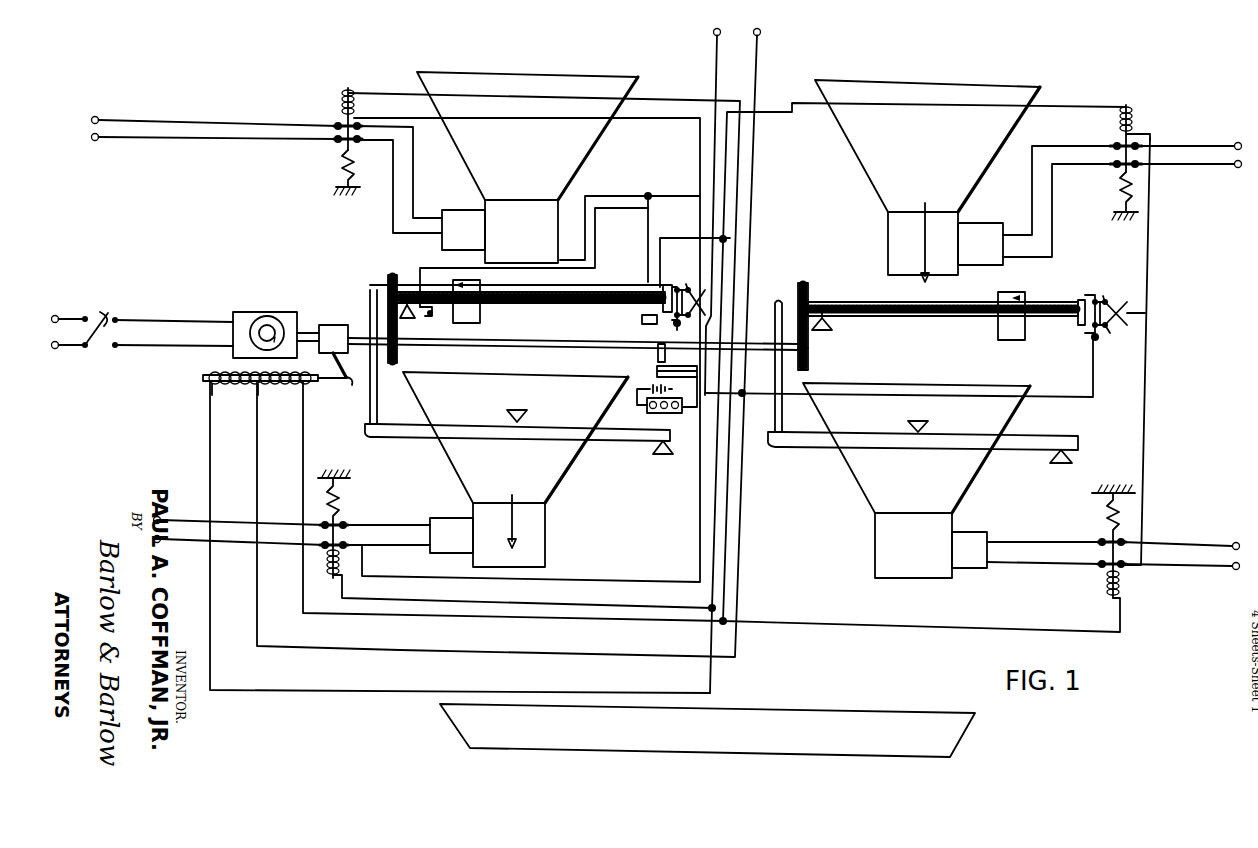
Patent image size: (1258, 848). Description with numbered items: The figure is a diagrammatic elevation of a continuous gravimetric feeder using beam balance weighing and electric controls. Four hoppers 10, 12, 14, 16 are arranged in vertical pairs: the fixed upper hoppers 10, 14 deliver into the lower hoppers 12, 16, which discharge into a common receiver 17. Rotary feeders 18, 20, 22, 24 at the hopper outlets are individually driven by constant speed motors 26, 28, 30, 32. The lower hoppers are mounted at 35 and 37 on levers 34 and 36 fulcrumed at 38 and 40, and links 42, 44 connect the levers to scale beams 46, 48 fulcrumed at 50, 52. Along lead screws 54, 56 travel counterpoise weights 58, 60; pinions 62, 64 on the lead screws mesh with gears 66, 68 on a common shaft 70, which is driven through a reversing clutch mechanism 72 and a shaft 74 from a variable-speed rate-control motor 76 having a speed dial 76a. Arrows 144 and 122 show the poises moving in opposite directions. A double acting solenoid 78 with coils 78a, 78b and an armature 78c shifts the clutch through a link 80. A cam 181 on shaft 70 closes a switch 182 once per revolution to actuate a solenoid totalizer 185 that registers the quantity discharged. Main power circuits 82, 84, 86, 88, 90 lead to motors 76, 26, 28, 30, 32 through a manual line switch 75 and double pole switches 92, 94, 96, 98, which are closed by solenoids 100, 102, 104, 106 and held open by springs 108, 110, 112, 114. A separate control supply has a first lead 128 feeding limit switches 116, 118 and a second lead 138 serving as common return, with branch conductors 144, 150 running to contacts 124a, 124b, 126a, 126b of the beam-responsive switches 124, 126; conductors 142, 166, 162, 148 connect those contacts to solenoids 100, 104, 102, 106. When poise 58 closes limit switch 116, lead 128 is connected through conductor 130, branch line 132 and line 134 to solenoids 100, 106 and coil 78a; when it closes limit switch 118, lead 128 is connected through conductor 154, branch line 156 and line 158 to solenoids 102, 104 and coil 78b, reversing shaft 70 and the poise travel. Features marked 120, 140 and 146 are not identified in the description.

The hopper 10 is at (588, 75).
The hopper 12 is at (563, 477).
The hopper 14 is at (1003, 84).
The hopper 16 is at (848, 470).
The common receiver 17 is at (965, 736).
The rotary feeder 18 is at (560, 218).
The rotary feeder 20 is at (548, 522).
The rotary feeder 22 is at (886, 256).
The rotary feeder 24 is at (876, 536).
The constant speed motor 26 is at (458, 210).
The constant speed motor 28 is at (441, 518).
The constant speed motor 30 is at (985, 222).
The constant speed motor 32 is at (982, 532).
The lever 34 is at (622, 442).
The hopper mounting 35 is at (522, 412).
The lever 36 is at (1030, 450).
The hopper mounting 37 is at (924, 424).
The fulcrum 38 is at (672, 452).
The fulcrum 40 is at (1074, 458).
The link 42 is at (374, 406).
The link 44 is at (783, 413).
The scale beam 46 is at (541, 306).
The scale beam 48 is at (924, 318).
The beam fulcrum 50 is at (410, 320).
The beam fulcrum 52 is at (824, 333).
The lead screw 54 is at (580, 306).
The lead screw 56 is at (969, 318).
The counterpoise weight 58 is at (481, 314).
The counterpoise weight 60 is at (1000, 340).
The pinion 62 is at (392, 274).
The pinion 64 is at (803, 283).
The gear 66 is at (398, 358).
The gear 68 is at (810, 366).
The common shaft 70 is at (560, 351).
The reversing clutch mechanism 72 is at (336, 325).
The shaft 74 is at (307, 332).
The line switch 75 is at (96, 314).
The variable-speed rate-control motor 76 is at (233, 318).
The dial 76a is at (267, 325).
The double acting solenoid 78 is at (194, 391).
The solenoid coil 78a is at (278, 390).
The solenoid coil 78b is at (236, 390).
The armature 78c is at (206, 374).
The link 80 is at (327, 382).
The main power circuit 82 is at (130, 324).
The main power circuit 84 is at (106, 128).
The main power circuit 86 is at (162, 518).
The main power circuit 88 is at (1228, 165).
The main power circuit 90 is at (1230, 545).
The double pole switch 92 is at (331, 158).
The double pole switch 94 is at (358, 510).
The double pole switch 96 is at (1107, 166).
The double pole switch 98 is at (1084, 573).
The solenoid 100 is at (341, 100).
The solenoid 102 is at (342, 572).
The solenoid 104 is at (1134, 120).
The solenoid 106 is at (1107, 592).
The spring 108 is at (350, 170).
The spring 110 is at (345, 487).
The spring 112 is at (1110, 190).
The spring 114 is at (1104, 518).
The limit switch 116 is at (429, 316).
The limit switch 118 is at (640, 320).
The pivot 120 is at (352, 388).
The arrow 122 is at (1012, 297).
The switch 124 is at (717, 289).
The contact 124a is at (670, 326).
The contact 124b is at (686, 282).
The switch 126 is at (1157, 316).
The contact 126a is at (1108, 337).
The contact 126b is at (1103, 292).
The first lead 128 is at (714, 45).
The conductor 130 is at (534, 257).
The branch line 132 is at (540, 96).
The line 134 is at (530, 618).
The second lead 138 is at (760, 62).
The feed direction arrow 140 is at (514, 498).
The conductor 142 is at (698, 170).
The branch conductor 144 is at (470, 283).
The feed direction arrow 146 is at (932, 248).
The conductor 148 is at (1146, 410).
The branch conductor 150 is at (1073, 396).
The conductor 154 is at (672, 232).
The branch line 156 is at (948, 112).
The line 158 is at (507, 690).
The conductor 162 is at (698, 492).
The conductor 166 is at (1148, 230).
The cam 181 is at (666, 356).
The switch 182 is at (658, 370).
The solenoid totalizer 185 is at (646, 414).